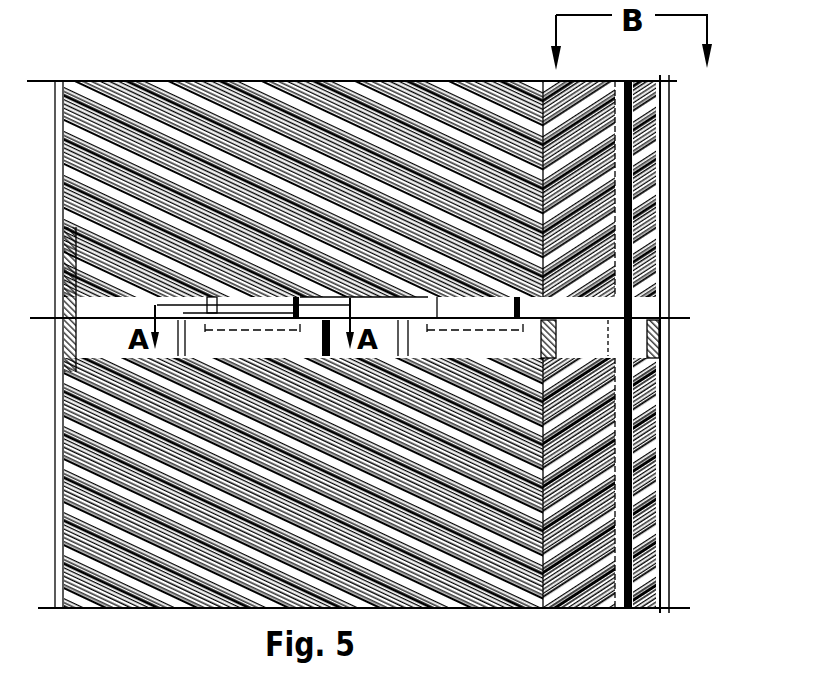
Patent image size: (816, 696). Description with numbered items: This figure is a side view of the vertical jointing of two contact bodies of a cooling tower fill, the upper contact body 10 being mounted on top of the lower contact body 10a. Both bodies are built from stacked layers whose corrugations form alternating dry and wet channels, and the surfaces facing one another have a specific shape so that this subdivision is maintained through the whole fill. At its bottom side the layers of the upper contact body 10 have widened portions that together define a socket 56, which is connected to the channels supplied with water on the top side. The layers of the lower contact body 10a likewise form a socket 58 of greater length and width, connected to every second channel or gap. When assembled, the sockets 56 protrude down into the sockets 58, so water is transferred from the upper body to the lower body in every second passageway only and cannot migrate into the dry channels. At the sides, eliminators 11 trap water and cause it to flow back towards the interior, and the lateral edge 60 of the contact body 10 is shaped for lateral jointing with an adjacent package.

The contact body 10 is at (253, 81).
The lower contact body 10a is at (125, 608).
The eliminators 11 is at (590, 485).
The socket 56 is at (167, 310).
The socket 58 is at (160, 330).
The lateral edge 60 is at (672, 256).